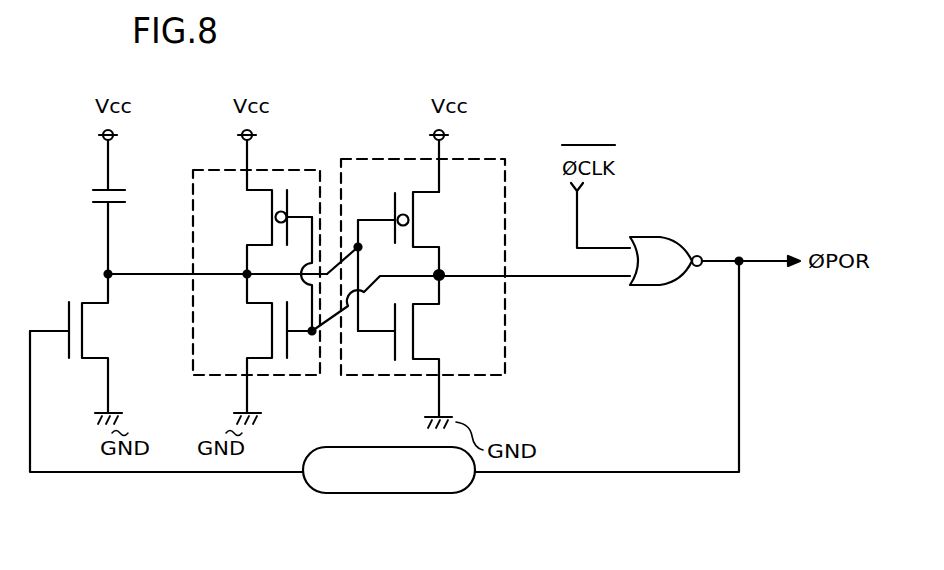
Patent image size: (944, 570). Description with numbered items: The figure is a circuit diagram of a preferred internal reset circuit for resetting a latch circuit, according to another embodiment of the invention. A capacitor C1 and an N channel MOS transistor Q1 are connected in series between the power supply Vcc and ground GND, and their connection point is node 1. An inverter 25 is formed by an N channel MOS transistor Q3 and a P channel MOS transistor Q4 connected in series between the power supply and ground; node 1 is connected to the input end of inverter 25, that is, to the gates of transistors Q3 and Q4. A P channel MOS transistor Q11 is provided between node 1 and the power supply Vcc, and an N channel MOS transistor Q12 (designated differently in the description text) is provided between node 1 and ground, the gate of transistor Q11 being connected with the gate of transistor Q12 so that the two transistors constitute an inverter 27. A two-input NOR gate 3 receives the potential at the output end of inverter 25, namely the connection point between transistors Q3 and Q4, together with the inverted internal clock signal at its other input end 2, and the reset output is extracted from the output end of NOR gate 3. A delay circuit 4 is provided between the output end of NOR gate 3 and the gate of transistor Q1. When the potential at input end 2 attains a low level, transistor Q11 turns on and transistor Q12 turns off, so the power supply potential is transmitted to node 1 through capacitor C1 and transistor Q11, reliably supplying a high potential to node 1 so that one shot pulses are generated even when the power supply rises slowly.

The node 1 is at (247, 273).
The input end of NOR gate 2 is at (628, 282).
The NOR gate 3 is at (687, 251).
The delay circuit 4 is at (462, 493).
The inverter 25 is at (423, 267).
The inverter 27 is at (245, 264).
The N channel MOS transistor Q1 is at (100, 333).
The P channel MOS transistor Q11 is at (263, 186).
The transistor Q12 is at (268, 333).
The N channel MOS transistor Q3 is at (425, 333).
The P channel MOS transistor Q4 is at (420, 226).
The capacitor C1 is at (133, 196).